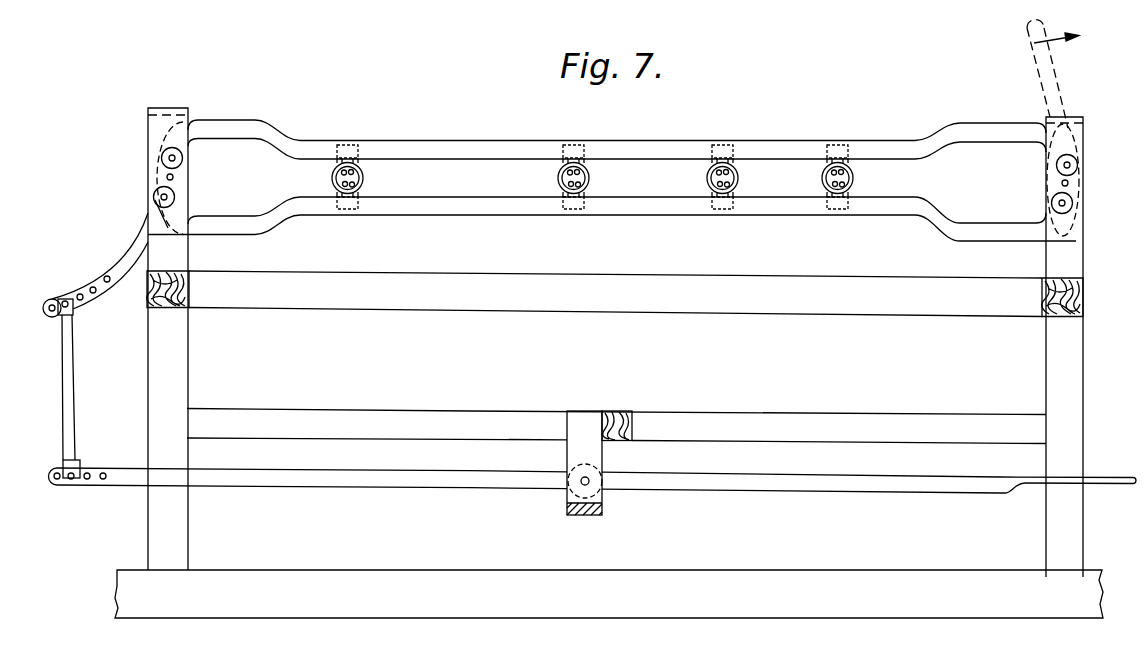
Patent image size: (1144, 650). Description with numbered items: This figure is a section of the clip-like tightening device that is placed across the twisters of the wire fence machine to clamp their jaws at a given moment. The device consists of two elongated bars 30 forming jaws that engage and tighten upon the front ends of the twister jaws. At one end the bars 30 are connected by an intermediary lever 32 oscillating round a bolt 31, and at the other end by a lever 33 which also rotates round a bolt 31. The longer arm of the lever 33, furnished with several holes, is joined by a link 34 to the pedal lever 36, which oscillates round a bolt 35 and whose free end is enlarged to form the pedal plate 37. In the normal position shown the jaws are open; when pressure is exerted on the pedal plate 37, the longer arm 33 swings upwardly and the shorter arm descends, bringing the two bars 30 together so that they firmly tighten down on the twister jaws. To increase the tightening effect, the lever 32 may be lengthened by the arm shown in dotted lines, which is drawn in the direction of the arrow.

The jaws 30 is at (639, 142).
The bolt 31 is at (176, 178).
The intermediary lever 32 is at (1072, 182).
The lever 33 is at (123, 266).
The link 34 is at (68, 387).
The bolt 35 is at (589, 483).
The pedal lever 36 is at (264, 479).
The pedal plate 37 is at (1121, 478).